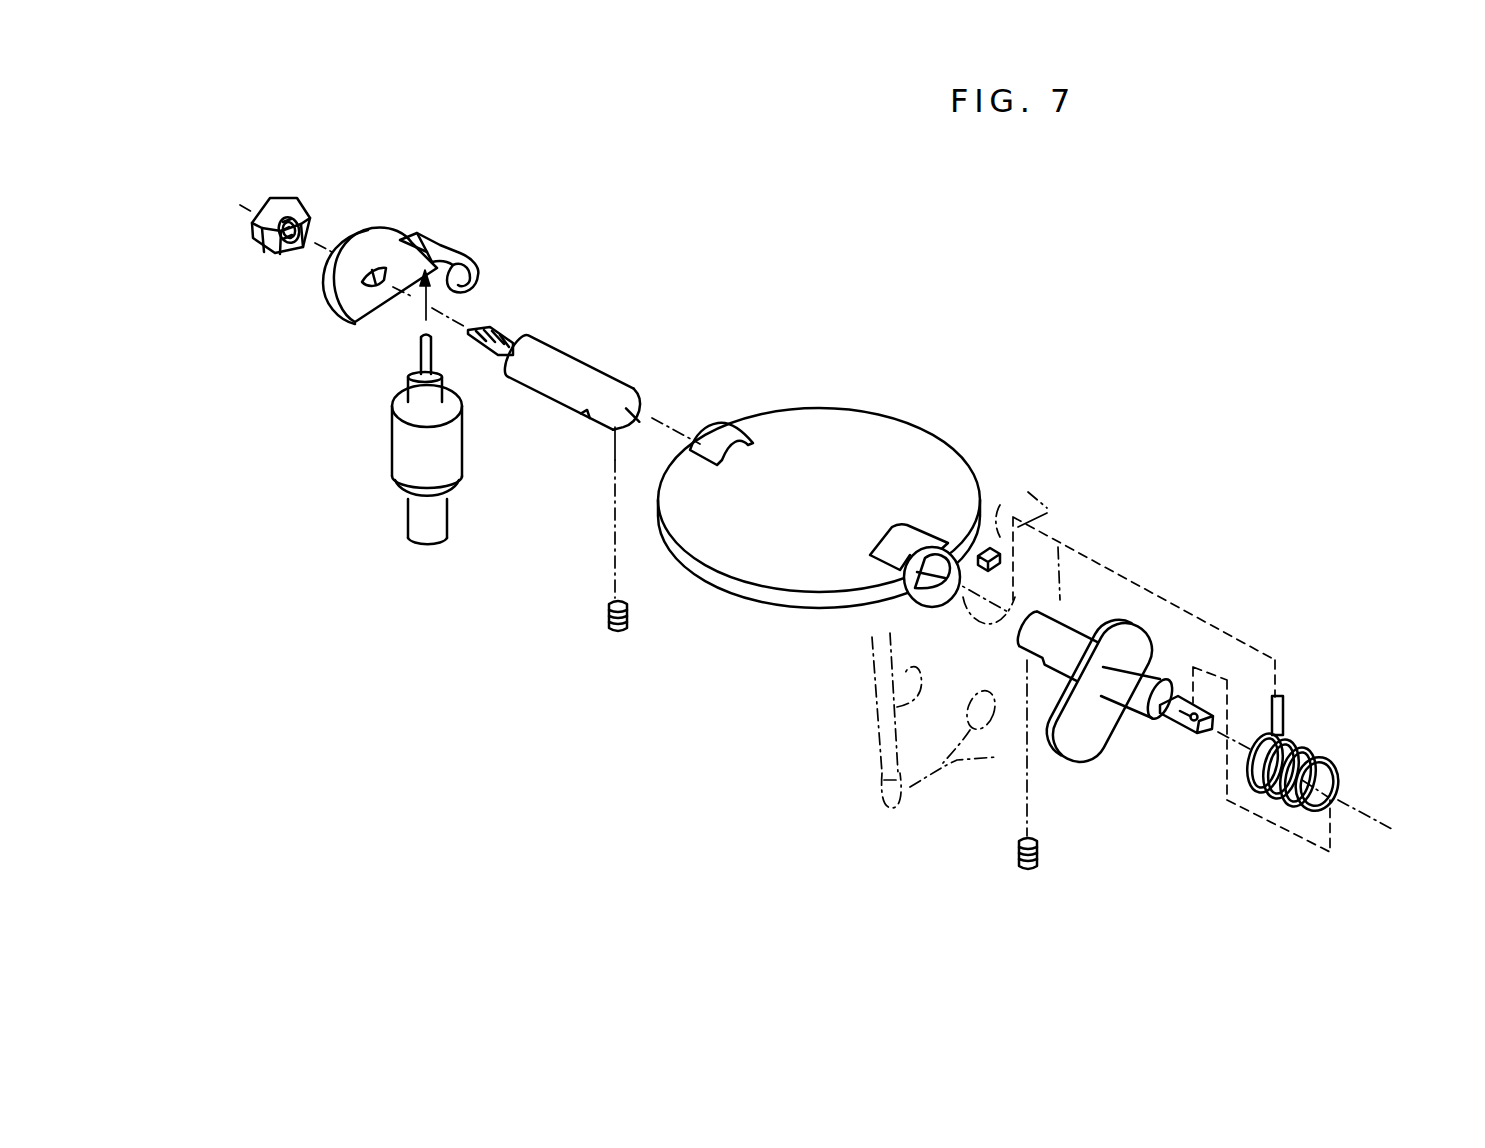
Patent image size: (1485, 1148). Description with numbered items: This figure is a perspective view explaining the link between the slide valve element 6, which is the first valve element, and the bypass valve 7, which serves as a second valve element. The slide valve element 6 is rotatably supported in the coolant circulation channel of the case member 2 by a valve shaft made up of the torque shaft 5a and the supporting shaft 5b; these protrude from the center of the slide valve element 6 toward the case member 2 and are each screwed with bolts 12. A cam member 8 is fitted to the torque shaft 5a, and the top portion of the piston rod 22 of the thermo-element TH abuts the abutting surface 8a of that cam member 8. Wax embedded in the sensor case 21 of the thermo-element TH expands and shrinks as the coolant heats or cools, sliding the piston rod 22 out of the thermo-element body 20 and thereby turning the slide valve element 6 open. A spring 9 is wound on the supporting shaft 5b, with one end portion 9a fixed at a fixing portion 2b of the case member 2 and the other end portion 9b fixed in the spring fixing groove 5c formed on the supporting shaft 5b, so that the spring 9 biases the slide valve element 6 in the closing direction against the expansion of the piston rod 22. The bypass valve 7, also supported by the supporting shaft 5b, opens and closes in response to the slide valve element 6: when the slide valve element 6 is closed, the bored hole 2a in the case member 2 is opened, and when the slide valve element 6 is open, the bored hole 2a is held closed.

The bolt 12 is at (283, 196).
The cam member 8 is at (356, 230).
The abutting surface 8a is at (467, 291).
The piston rod 22 is at (423, 327).
The thermostat body 20 is at (413, 456).
The thermo-element TH is at (376, 486).
The sensor case 21 is at (429, 540).
The torque shaft 5a is at (562, 364).
The slide valve element 6 is at (828, 468).
The fixing portion 2b is at (990, 480).
The case member 2 is at (857, 707).
The bored hole 2a is at (911, 802).
The supporting shaft 5b is at (1062, 630).
The bypass valve 7 is at (1093, 727).
The spring fixing groove 5c is at (1177, 723).
The spring 9 is at (1298, 744).
The spring first end 9a is at (1283, 700).
The spring second end 9b is at (1340, 802).